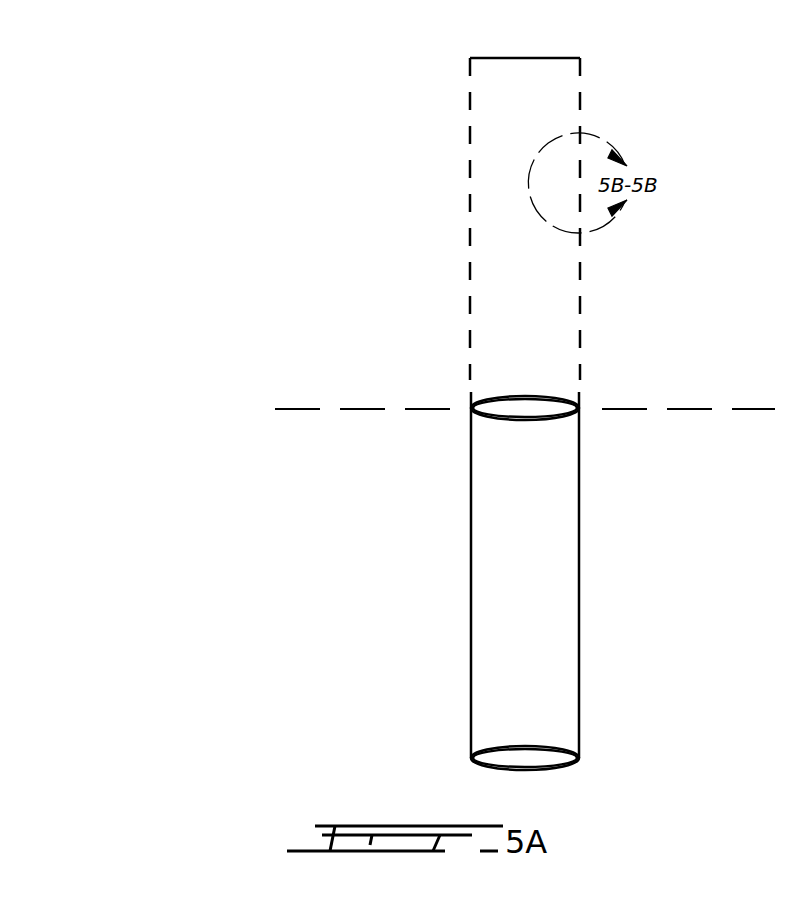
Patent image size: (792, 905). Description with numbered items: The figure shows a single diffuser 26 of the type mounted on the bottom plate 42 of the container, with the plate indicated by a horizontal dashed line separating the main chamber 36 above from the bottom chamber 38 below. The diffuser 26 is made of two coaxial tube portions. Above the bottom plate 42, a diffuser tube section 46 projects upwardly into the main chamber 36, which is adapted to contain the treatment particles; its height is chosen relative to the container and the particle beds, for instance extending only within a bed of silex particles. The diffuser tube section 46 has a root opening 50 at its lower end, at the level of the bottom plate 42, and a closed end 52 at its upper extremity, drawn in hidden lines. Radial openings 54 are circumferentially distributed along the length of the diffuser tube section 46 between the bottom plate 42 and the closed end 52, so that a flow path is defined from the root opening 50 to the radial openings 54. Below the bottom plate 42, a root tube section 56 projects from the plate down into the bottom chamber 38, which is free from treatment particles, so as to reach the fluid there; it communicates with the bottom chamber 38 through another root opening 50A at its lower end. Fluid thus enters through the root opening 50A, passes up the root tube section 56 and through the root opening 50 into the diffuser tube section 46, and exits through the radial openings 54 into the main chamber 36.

The diffuser 26 is at (166, 289).
The main chamber 36 is at (744, 308).
The bottom chamber 38 is at (744, 575).
The bottom plate 42 is at (297, 407).
The diffuser tube section 46 is at (358, 184).
The root opening 50 is at (489, 414).
The another root opening 50A is at (487, 765).
The closed end 52 is at (510, 58).
The radial openings 54 is at (470, 285).
The root tube section 56 is at (357, 637).